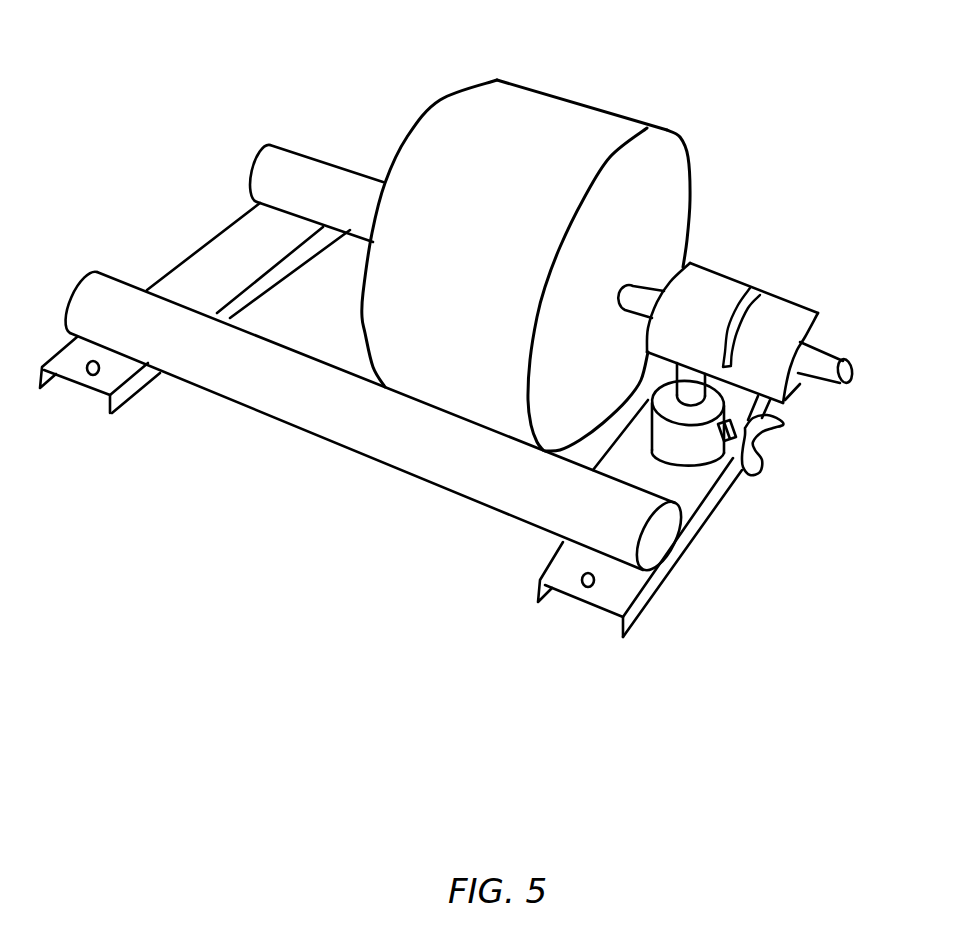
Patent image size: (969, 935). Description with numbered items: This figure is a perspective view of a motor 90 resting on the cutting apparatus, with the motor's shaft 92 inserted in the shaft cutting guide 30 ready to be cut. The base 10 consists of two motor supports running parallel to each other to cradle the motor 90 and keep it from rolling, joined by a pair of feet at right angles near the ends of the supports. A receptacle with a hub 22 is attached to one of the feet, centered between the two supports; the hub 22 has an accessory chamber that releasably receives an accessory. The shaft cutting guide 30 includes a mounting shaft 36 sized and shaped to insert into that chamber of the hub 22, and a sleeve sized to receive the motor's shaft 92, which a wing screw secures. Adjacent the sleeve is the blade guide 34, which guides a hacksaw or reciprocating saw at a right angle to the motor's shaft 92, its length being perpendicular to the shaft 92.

The base 10 is at (345, 477).
The hub 22 is at (697, 443).
The shaft cutting guide 30 is at (730, 276).
The blade guide 34 is at (754, 295).
The mounting shaft 36 is at (690, 392).
The motor 90 is at (568, 99).
The motor's shaft 92 is at (818, 382).